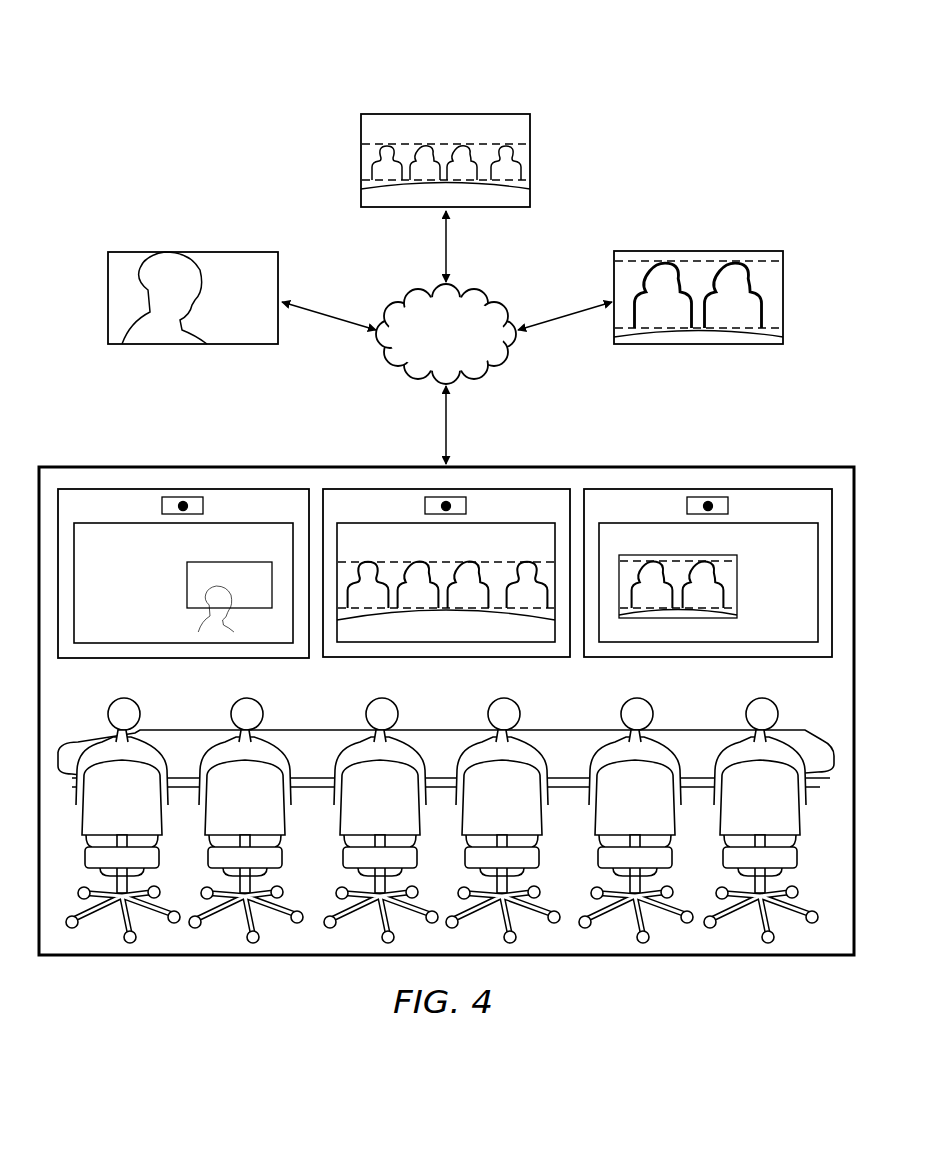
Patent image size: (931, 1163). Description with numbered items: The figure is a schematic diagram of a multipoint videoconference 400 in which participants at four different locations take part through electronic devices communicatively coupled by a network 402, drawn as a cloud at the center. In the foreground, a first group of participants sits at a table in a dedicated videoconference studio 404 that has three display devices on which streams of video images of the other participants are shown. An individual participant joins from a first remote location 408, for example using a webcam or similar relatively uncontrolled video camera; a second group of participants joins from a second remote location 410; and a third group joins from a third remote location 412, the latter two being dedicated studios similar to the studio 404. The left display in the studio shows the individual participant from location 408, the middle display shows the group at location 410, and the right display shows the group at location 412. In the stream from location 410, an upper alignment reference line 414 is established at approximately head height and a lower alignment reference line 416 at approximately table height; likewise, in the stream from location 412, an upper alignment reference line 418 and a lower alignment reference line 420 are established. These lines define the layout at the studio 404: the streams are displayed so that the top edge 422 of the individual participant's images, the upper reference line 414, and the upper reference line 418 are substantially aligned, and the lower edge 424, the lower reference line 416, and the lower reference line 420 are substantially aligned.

The multipoint videoconference 400 is at (285, 107).
The network 402 is at (476, 288).
The dedicated videoconference studio 404 is at (535, 463).
The first remote location 408 is at (107, 298).
The second remote location 410 is at (458, 114).
The third remote location 412 is at (786, 290).
The upper alignment reference line 414 is at (409, 144).
The lower alignment reference line 416 is at (513, 182).
The upper alignment reference line 418 is at (698, 261).
The lower alignment reference line 420 is at (760, 322).
The top edge 422 is at (207, 562).
The lower edge 424 is at (206, 608).